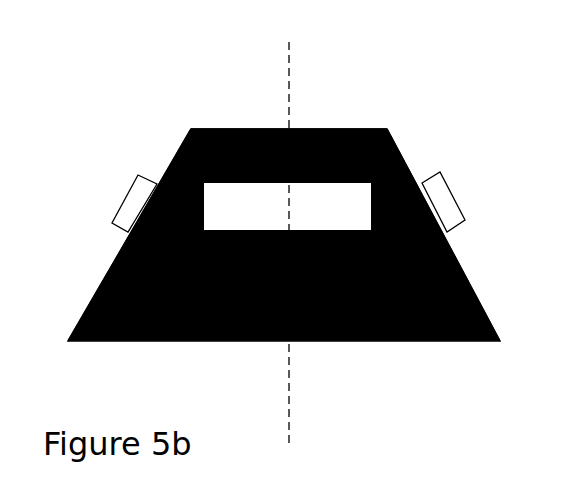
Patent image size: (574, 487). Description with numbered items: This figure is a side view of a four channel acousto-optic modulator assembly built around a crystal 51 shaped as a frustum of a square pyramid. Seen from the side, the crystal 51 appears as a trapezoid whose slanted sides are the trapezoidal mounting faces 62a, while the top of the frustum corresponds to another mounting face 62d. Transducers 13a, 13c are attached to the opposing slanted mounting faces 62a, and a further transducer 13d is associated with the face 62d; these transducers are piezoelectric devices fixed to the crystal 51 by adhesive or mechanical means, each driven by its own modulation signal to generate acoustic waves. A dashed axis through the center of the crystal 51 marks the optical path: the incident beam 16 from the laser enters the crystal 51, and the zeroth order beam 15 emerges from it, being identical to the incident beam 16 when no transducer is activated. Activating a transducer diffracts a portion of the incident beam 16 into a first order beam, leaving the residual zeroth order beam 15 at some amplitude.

The crystal 51 is at (78, 289).
The mounting face 62d is at (362, 130).
The mounting face 62a is at (172, 162).
The transducer 13d is at (257, 195).
The first acoustic transducer 13a is at (128, 207).
The transducer 13c is at (440, 195).
The zeroth order beam 15 is at (298, 73).
The incident beam 16 is at (300, 420).